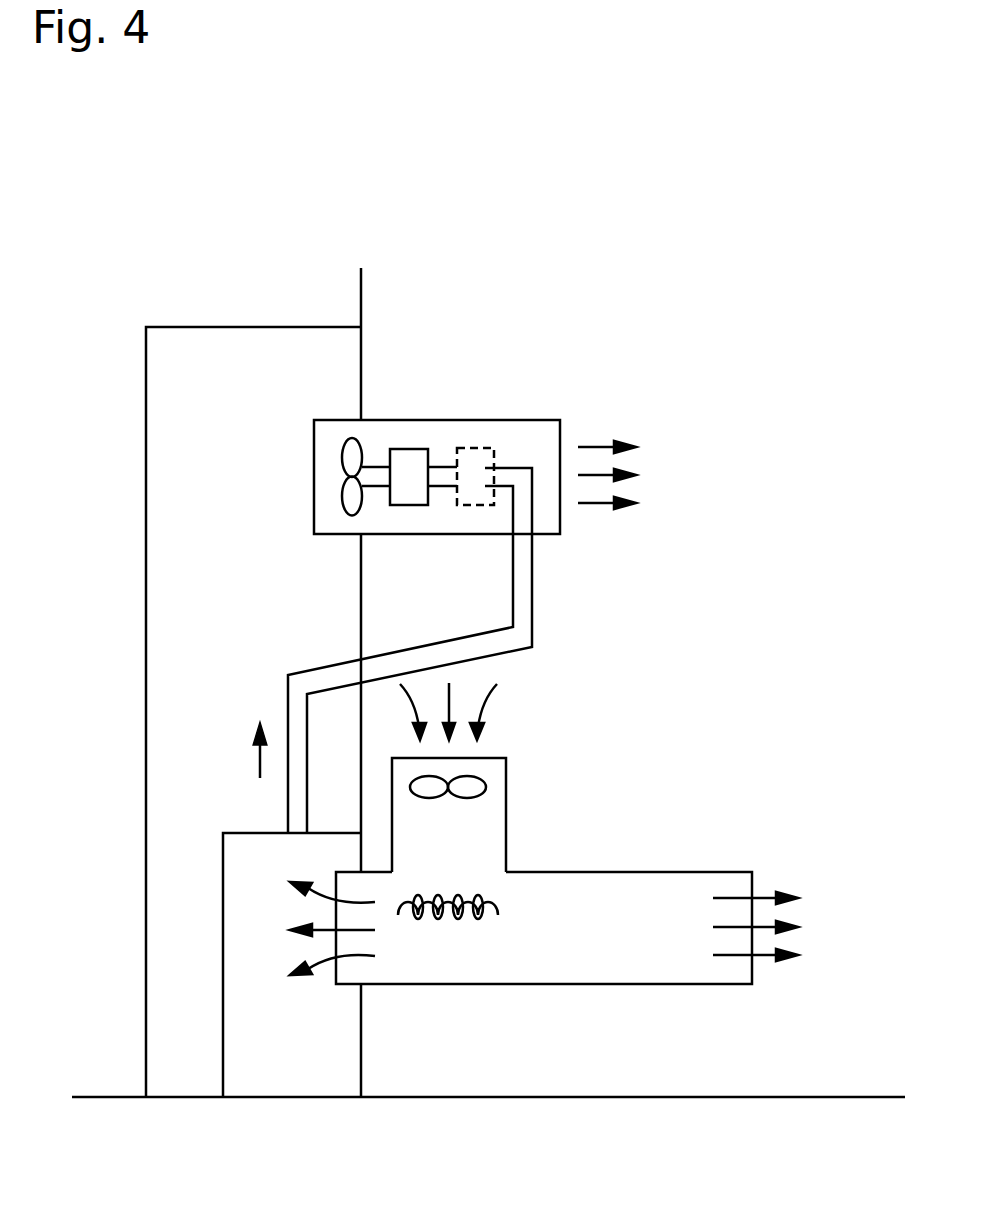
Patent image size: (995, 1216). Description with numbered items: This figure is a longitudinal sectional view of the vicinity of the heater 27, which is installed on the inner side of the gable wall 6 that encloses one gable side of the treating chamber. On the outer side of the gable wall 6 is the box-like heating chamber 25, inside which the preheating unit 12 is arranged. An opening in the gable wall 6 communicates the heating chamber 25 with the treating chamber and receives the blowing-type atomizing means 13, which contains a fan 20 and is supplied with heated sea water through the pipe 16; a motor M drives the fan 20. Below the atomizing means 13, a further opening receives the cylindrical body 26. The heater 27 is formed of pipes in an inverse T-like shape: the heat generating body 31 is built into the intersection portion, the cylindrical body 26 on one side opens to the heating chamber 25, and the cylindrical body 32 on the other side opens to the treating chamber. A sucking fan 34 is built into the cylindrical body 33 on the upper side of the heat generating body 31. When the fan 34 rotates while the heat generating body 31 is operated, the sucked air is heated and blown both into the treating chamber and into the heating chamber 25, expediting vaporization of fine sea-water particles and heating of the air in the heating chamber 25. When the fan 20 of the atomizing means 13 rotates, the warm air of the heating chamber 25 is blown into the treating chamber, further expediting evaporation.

The gable wall 6 is at (360, 390).
The preheating unit 12 is at (223, 965).
The atomizing means 13 is at (437, 428).
The pipe 16 is at (299, 713).
The fan 20 is at (352, 458).
The motor M is at (417, 497).
The heating chamber 25 is at (220, 335).
The cylindrical body 26 is at (345, 985).
The heater 27 is at (572, 830).
The heat generating body 31 is at (468, 918).
The cylindrical body 32 is at (658, 984).
The cylindrical body 33 is at (506, 832).
The fan 34 is at (477, 788).